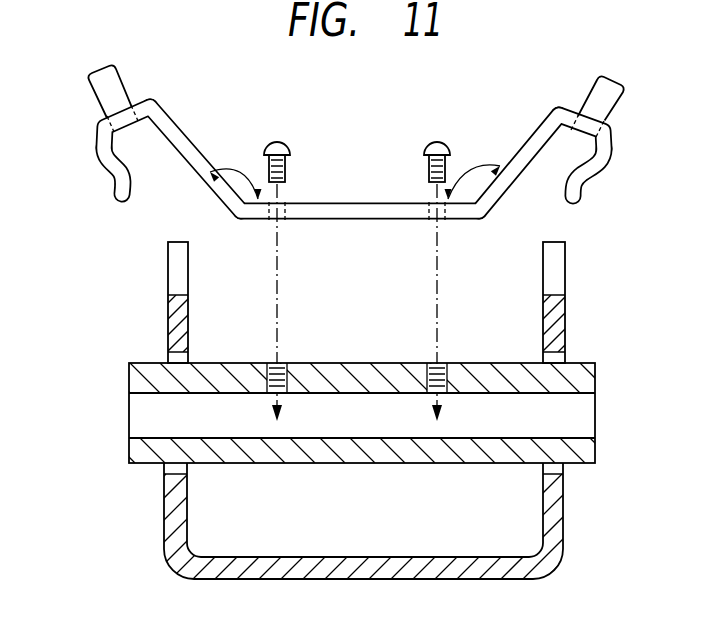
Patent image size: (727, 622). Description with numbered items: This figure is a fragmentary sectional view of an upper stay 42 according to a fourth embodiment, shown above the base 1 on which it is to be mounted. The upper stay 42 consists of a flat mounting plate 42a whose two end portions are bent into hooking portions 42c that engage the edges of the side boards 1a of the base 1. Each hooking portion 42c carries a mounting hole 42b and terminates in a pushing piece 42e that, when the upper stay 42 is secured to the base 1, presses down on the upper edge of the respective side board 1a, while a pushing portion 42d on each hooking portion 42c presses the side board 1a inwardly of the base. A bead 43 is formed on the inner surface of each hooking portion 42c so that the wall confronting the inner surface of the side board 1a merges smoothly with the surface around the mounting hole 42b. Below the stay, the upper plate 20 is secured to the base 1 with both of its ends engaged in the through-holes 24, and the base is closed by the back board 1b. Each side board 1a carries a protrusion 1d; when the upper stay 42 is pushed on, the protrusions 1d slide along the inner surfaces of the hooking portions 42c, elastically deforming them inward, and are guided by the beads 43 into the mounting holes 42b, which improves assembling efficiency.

The base 1 is at (355, 542).
The side boards 1a is at (163, 515).
The back board 1b is at (488, 574).
The protrusions 1d is at (167, 318).
The upper plate 20 is at (367, 468).
The through-holes 24 is at (187, 467).
The upper stay 42 is at (368, 138).
The mounting plate 42a is at (387, 209).
The mounting holes 42b is at (112, 102).
The hooking portions 42c is at (182, 130).
The pushing portions 42d is at (114, 173).
The pushing pieces 42e is at (118, 74).
The bead 43 is at (152, 126).